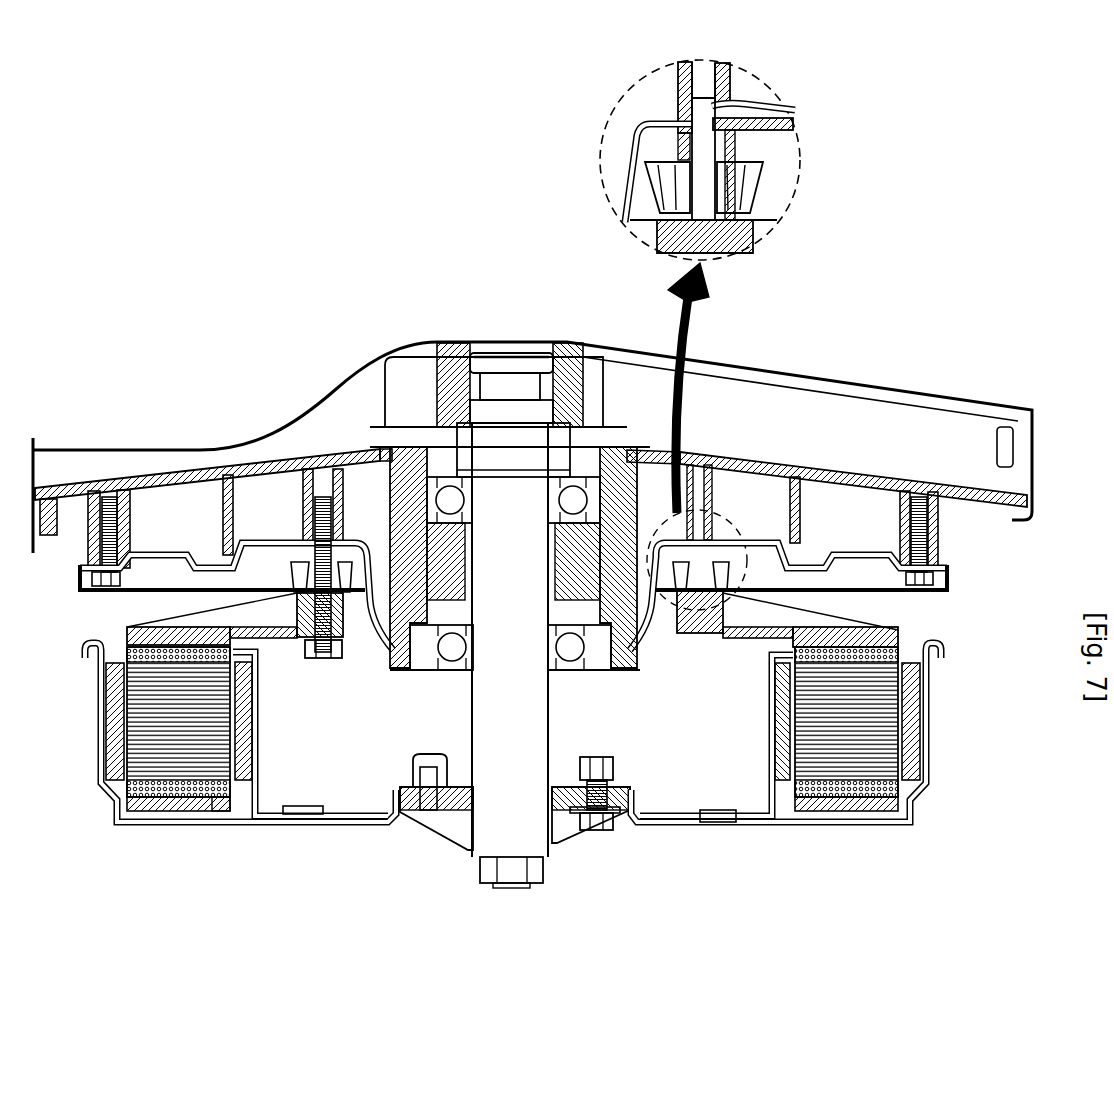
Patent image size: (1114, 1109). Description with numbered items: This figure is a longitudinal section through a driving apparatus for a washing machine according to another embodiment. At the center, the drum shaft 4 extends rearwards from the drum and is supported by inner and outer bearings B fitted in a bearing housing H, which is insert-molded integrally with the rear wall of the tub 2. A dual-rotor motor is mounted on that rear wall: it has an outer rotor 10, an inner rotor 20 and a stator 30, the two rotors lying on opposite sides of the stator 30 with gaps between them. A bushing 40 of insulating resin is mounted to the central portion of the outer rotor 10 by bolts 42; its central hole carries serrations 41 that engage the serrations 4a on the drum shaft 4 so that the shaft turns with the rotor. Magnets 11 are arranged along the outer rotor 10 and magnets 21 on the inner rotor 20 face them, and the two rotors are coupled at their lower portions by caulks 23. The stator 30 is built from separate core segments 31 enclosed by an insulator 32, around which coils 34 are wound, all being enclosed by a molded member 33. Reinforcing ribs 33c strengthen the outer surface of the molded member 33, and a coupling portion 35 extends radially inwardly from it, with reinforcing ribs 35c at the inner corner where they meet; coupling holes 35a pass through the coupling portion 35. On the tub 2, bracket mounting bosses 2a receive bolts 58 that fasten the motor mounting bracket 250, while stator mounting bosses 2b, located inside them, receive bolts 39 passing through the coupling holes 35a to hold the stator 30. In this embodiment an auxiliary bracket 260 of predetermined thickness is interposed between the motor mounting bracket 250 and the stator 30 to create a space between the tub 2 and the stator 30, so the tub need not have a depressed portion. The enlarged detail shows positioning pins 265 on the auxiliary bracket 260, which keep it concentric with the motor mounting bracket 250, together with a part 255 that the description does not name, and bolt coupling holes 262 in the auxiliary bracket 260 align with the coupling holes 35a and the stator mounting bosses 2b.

The tub 2 is at (352, 447).
The bracket mounting bosses 2a is at (935, 517).
The stator mounting bosses 2b is at (307, 470).
The drum shaft 4 is at (512, 507).
The serrations 4a is at (527, 890).
The outer rotor 10 is at (838, 836).
The magnets 11 is at (100, 714).
The inner rotor 20 is at (762, 750).
The magnets 21 is at (258, 745).
The caulks 23 is at (705, 808).
The stator 30 is at (906, 634).
The core segments 31 is at (140, 755).
The insulator 32 is at (140, 810).
The molded member 33 is at (186, 811).
The reinforcing ribs 33c is at (240, 604).
The coils 34 is at (218, 811).
The coupling portion 35 is at (290, 637).
The coupling holes 35a is at (368, 637).
The reinforcing ribs 35c is at (760, 640).
The bolts 39 is at (327, 658).
The bushing 40 is at (458, 862).
The serrations 41 is at (465, 812).
The bolts 42 is at (597, 828).
The bolts 58 is at (932, 547).
The motor mounting bracket 250 is at (207, 562).
The hanger 255 is at (717, 108).
The auxiliary bracket 260 is at (300, 560).
The bolt coupling holes 262 is at (323, 497).
The positioning pins 265 is at (712, 150).
The bearings B is at (466, 517).
The bearing housing H is at (600, 652).